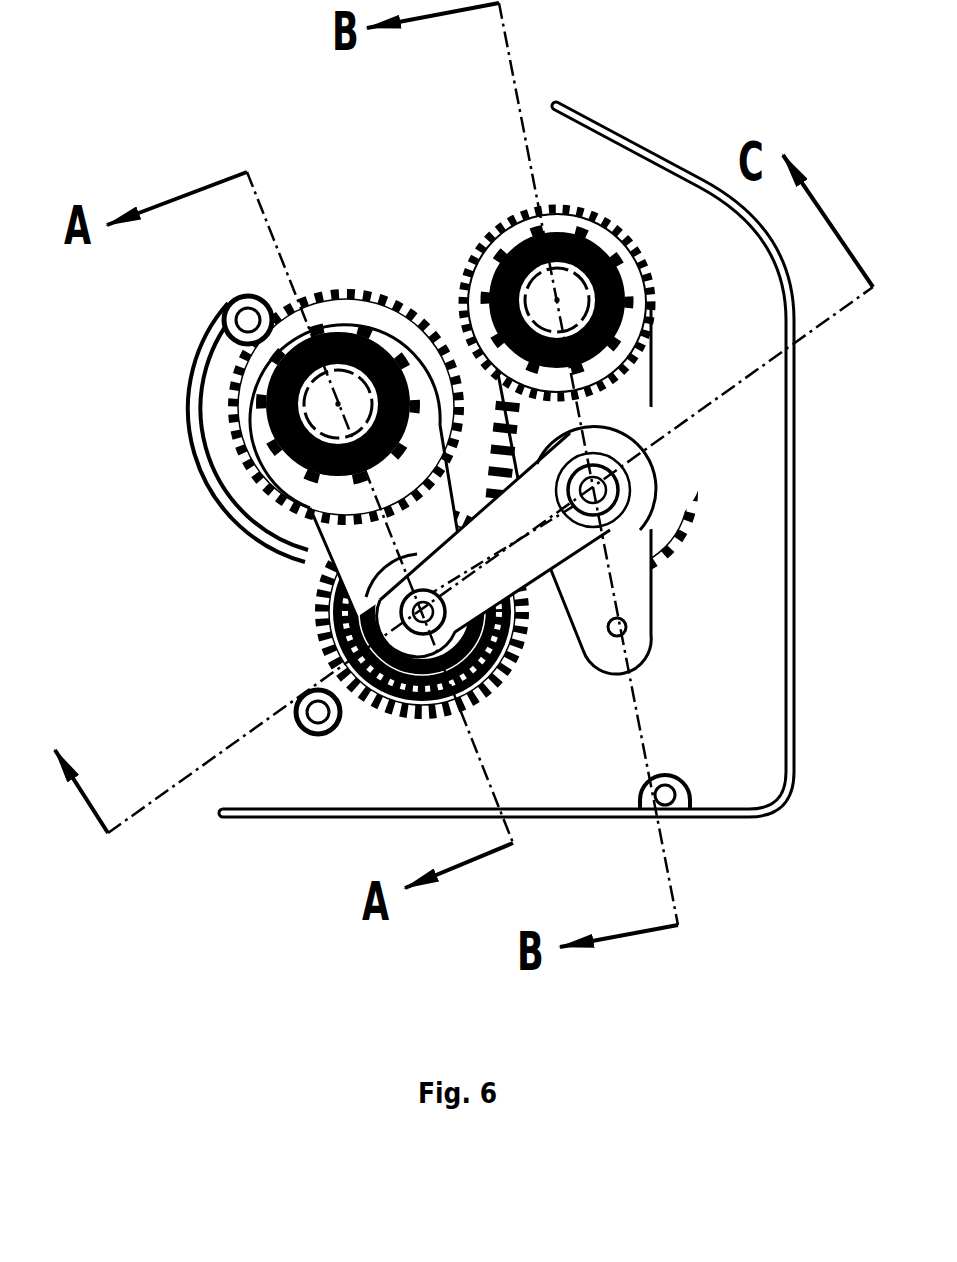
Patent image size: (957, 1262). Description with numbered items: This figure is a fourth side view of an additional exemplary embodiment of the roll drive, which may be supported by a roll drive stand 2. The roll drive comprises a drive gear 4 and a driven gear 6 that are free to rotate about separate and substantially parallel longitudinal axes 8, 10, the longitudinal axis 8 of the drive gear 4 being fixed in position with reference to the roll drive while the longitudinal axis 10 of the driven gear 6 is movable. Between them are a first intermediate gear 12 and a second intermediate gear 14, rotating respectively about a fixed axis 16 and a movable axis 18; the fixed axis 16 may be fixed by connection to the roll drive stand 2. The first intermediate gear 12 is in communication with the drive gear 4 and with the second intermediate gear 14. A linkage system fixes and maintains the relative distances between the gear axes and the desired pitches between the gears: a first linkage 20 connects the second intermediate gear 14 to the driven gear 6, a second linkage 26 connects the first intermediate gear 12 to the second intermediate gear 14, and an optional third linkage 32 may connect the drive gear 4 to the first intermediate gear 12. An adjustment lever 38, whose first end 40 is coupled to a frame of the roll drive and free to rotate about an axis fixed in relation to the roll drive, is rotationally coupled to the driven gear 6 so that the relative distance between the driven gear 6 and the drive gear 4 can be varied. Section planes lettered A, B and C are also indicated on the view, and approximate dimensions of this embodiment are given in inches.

The roll drive stand 2 is at (610, 125).
The drive gear 4 is at (507, 210).
The driven gear 6 is at (363, 293).
The longitudinal axis 8 is at (492, 247).
The longitudinal axis 10 is at (300, 426).
The first intermediate gear 12 is at (702, 505).
The second intermediate gear 14 is at (312, 618).
The fixed axis 16 is at (613, 500).
The movable axis 18 is at (423, 612).
The first linkage 20 is at (350, 538).
The second linkage 26 is at (553, 560).
The third linkage 32 is at (632, 383).
The adjustment lever 38 is at (187, 388).
The first end 40 is at (247, 320).